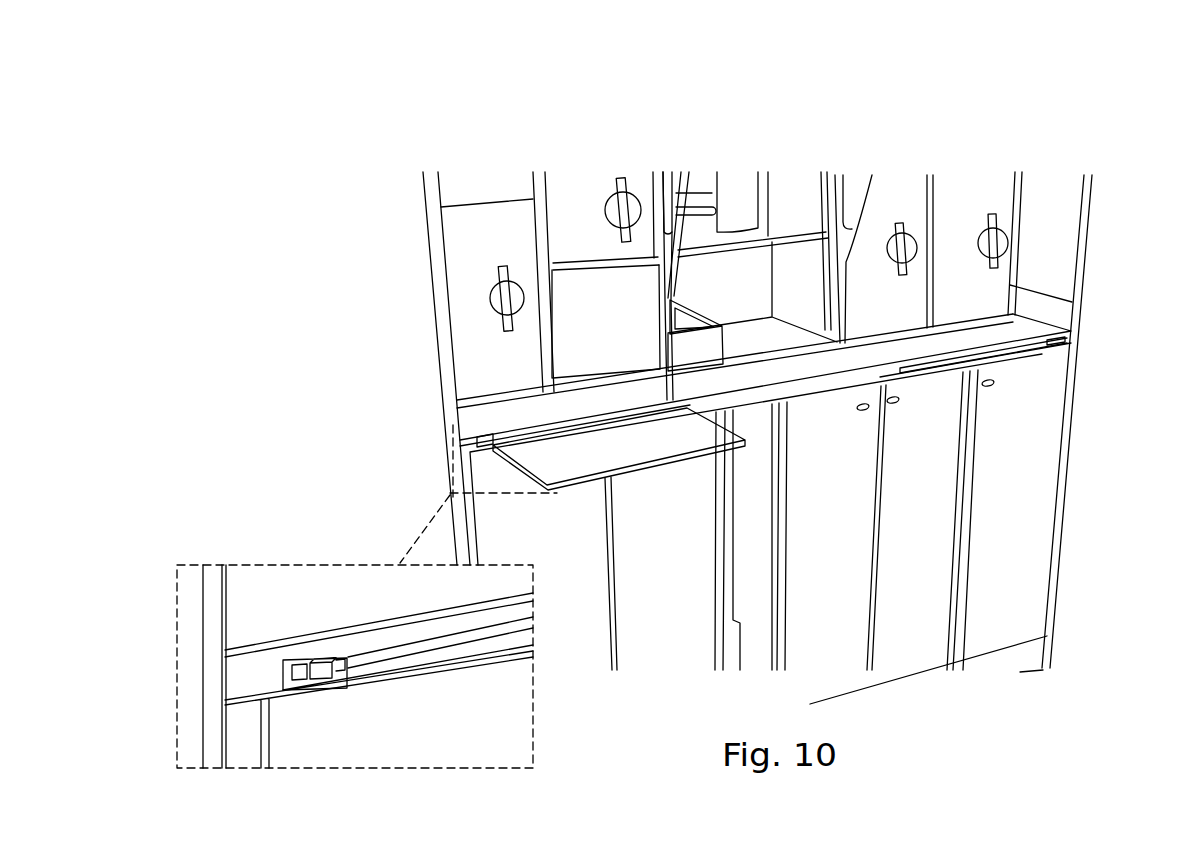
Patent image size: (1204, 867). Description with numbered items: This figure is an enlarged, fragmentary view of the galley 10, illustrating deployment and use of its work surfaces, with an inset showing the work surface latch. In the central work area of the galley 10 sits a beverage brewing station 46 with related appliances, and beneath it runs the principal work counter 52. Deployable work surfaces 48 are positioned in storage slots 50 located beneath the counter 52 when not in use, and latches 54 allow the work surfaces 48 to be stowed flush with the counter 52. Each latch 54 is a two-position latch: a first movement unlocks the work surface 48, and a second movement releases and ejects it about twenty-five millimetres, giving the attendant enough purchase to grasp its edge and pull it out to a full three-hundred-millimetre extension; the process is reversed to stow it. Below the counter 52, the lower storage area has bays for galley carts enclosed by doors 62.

The galley 10 is at (1110, 177).
The beverage brewing station 46 is at (742, 290).
The work surface 48 is at (665, 441).
The storage slot 50 is at (603, 413).
The principal work counter 52 is at (1015, 332).
The latch 54 is at (483, 447).
The door 62 is at (572, 638).